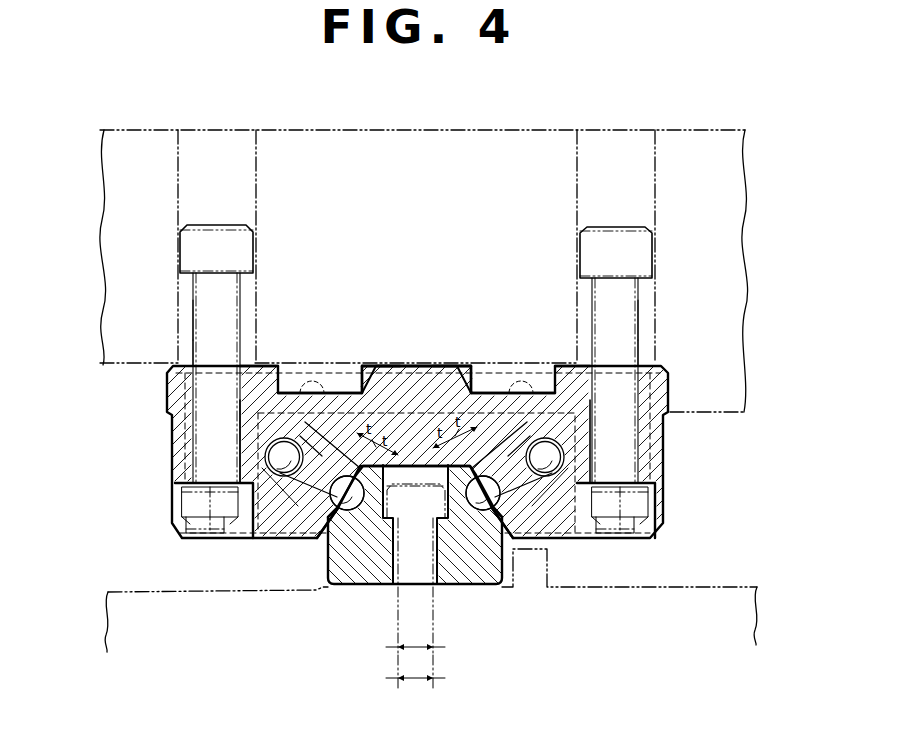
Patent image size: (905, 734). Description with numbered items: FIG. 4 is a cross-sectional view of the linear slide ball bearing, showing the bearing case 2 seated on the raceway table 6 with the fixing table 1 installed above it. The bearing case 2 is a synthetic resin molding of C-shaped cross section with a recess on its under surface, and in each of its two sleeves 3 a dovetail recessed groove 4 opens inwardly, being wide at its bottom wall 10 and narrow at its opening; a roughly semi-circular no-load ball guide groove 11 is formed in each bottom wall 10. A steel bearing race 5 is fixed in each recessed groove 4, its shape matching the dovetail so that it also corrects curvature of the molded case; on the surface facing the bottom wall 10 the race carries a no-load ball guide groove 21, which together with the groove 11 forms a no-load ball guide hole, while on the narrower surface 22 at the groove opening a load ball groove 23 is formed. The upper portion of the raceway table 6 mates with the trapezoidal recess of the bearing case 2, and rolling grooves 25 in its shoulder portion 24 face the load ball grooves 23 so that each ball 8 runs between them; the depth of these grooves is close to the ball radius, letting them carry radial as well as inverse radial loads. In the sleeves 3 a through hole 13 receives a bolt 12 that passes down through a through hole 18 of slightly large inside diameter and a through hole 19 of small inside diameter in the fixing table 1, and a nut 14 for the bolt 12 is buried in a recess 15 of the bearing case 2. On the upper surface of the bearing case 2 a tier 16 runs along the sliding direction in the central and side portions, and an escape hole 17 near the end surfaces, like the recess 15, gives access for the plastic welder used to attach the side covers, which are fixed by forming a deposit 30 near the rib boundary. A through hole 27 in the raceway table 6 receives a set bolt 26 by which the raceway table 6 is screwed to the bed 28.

The fixing table 1 is at (530, 127).
The bearing case 2 is at (397, 364).
The sleeve 3 is at (178, 399).
The dovetail recessed groove 4 is at (306, 436).
The bearing race 5 is at (378, 367).
The raceway table 6 is at (440, 590).
The ball 8 is at (277, 460).
The bottom wall 10 is at (250, 470).
The no-load ball guide groove 11 is at (275, 442).
The bolt 12 is at (200, 313).
The through hole 13 is at (203, 343).
The nut 14 is at (185, 508).
The recess 15 is at (187, 493).
The tier 16 is at (254, 362).
The escape hole 17 is at (357, 365).
The through hole 18 is at (180, 152).
The through hole 19 is at (193, 288).
The no-load ball guide groove 21 is at (300, 505).
The surface 22 is at (335, 506).
The load ball groove 23 is at (290, 515).
The track rail 24 is at (338, 545).
The rolling groove 25 is at (372, 530).
The set bolt 26 is at (447, 677).
The through hole 27 is at (410, 565).
The bed 28 is at (728, 586).
The deposit 30 is at (323, 384).